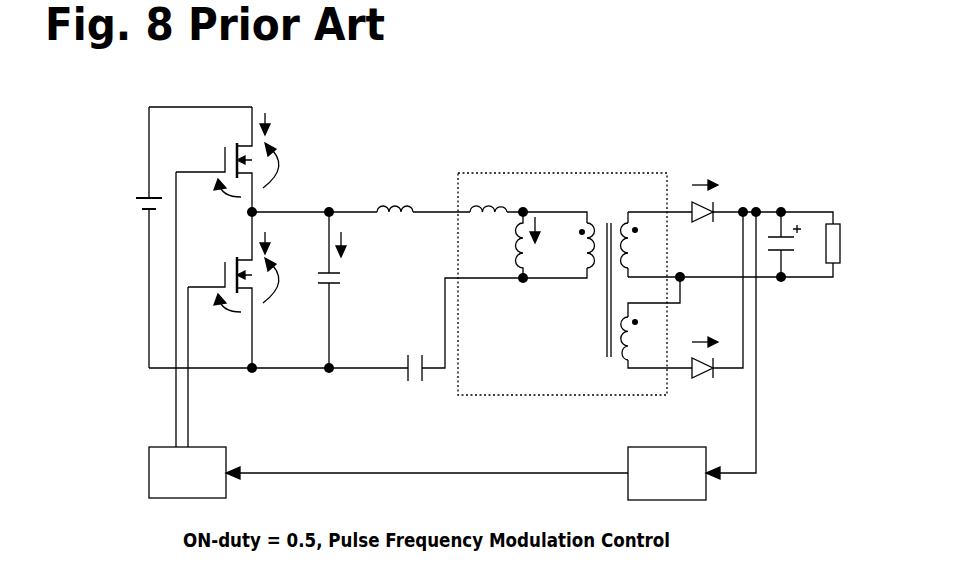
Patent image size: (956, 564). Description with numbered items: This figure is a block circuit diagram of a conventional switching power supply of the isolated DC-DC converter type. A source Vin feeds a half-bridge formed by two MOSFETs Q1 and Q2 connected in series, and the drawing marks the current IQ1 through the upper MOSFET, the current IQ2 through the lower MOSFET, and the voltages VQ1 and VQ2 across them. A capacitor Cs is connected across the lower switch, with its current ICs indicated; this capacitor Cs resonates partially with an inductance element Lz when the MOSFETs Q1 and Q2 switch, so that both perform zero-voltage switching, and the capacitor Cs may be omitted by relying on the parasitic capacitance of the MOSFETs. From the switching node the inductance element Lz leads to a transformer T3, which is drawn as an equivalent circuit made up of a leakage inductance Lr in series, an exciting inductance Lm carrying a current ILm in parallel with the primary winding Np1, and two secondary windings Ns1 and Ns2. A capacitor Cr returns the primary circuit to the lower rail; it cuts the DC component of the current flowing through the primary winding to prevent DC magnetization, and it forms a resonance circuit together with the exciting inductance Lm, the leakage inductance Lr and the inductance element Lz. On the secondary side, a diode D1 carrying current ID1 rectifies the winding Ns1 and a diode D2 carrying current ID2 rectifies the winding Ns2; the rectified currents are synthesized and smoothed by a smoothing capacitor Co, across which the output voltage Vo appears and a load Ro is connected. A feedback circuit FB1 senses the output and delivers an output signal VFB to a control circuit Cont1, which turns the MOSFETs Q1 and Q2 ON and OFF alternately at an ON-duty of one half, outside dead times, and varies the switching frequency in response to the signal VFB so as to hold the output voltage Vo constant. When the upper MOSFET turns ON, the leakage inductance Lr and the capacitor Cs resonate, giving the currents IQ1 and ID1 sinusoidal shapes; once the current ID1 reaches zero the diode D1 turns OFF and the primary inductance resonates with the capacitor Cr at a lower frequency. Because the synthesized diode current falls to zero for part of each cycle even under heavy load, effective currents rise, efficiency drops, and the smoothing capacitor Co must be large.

The input voltage source Vin is at (130, 207).
The MOSFET Q1 is at (214, 159).
The MOSFET Q2 is at (220, 290).
The current IQ1 is at (281, 124).
The current of Q2 IQ2 is at (281, 243).
The voltage across Q1 VQ1 is at (288, 165).
The voltage across Q2 VQ2 is at (288, 280).
The current of capacitor Cs ICs is at (353, 244).
The resonance capacitor Cs is at (343, 290).
The capacitor Cr is at (411, 383).
The inductance element Lz is at (395, 199).
The leakage inductance Lr is at (488, 200).
The exciting inductance Lm is at (503, 245).
The magnetizing current ILm is at (547, 230).
The transformer T3 is at (562, 271).
The primary winding Np1 is at (574, 245).
The secondary winding Ns1 is at (642, 245).
The secondary winding Ns2 is at (642, 338).
The diode D1 is at (703, 224).
The current ID1 is at (705, 180).
The diode D2 is at (703, 382).
The current of D2 ID2 is at (705, 336).
The smoothing capacitor Co is at (793, 244).
The load resistor Ro is at (849, 243).
The output voltage Vo is at (829, 192).
The control circuit Cont1 is at (187, 472).
The feedback circuit FB1 is at (667, 473).
The output signal VFB is at (319, 460).